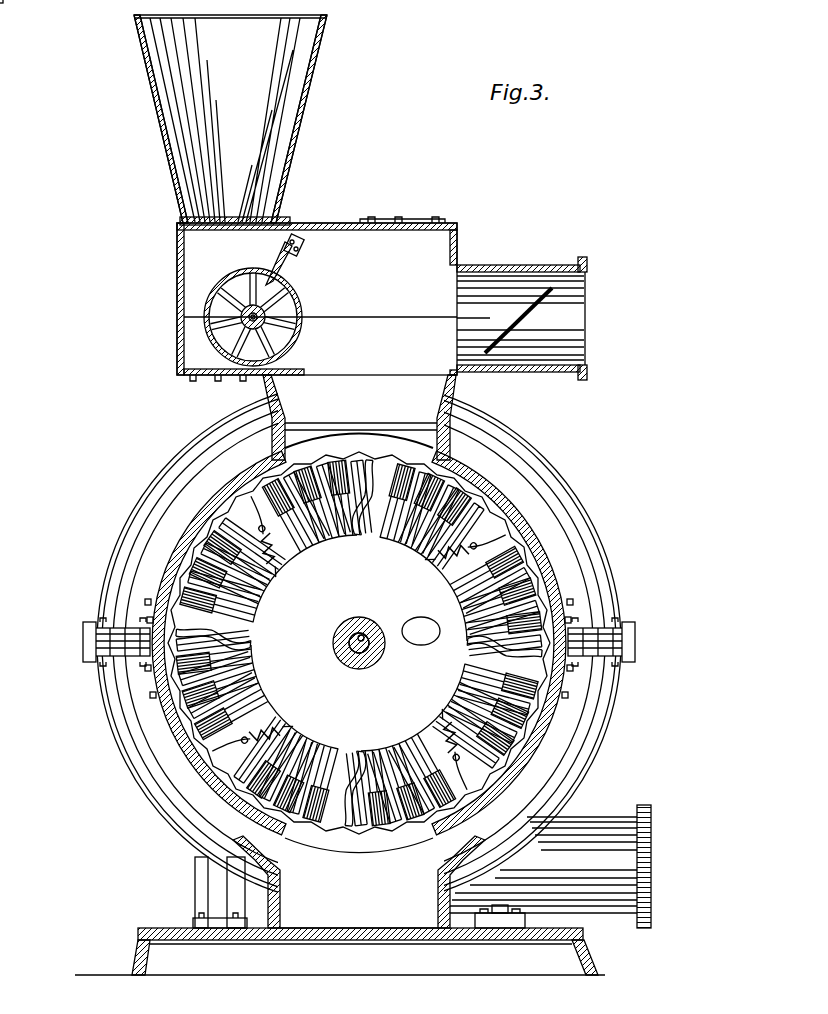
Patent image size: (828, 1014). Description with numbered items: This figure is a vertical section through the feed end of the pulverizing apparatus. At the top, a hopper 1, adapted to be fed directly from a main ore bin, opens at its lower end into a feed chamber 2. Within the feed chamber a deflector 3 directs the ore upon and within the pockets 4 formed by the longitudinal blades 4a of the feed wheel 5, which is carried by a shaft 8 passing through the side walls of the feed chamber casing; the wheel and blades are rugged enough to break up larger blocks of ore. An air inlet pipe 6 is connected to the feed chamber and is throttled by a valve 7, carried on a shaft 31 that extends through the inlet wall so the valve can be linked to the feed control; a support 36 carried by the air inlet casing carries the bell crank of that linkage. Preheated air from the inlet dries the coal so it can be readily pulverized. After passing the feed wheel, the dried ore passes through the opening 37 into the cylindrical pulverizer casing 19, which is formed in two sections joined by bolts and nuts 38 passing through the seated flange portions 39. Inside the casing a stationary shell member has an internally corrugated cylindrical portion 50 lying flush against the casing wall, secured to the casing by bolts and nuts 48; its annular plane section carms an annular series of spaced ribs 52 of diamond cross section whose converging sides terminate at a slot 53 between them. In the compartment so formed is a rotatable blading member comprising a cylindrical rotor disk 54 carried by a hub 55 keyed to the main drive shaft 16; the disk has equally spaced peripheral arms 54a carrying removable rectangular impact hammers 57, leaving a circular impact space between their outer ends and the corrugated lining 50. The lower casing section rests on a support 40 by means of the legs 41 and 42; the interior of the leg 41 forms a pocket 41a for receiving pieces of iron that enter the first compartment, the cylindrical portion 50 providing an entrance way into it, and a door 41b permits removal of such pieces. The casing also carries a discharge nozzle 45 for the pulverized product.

The hopper 1 is at (290, 120).
The feed chamber 2 is at (205, 263).
The deflector 3 is at (262, 265).
The pockets 4 is at (218, 302).
The longitudinal blades 4a is at (226, 272).
The feed wheel 5 is at (240, 340).
The shaft 8 is at (227, 325).
The air inlet pipe 6 is at (516, 268).
The valve 7 is at (548, 290).
The shaft 31 is at (522, 325).
The opening 37 is at (300, 403).
The pulverizer casing 19 is at (185, 525).
The cylindrical portion 50 is at (200, 505).
The bolts and nuts 48 is at (150, 600).
The bolts and nuts 38 is at (86, 626).
The flange portions 39 is at (85, 645).
The ribs 52 is at (334, 527).
The slot 53 is at (282, 530).
The impact hammers 57 is at (455, 548).
The peripheral arms 54a is at (472, 563).
The rotor disk 54 is at (421, 631).
The support 36 is at (362, 630).
The main drive shaft 16 is at (350, 666).
The hub 55 is at (380, 662).
The door 41b is at (280, 900).
The leg 41 is at (432, 930).
The pocket 41a is at (355, 910).
The leg 42 is at (200, 905).
The support 40 is at (592, 968).
The discharge nozzle 45 is at (640, 810).